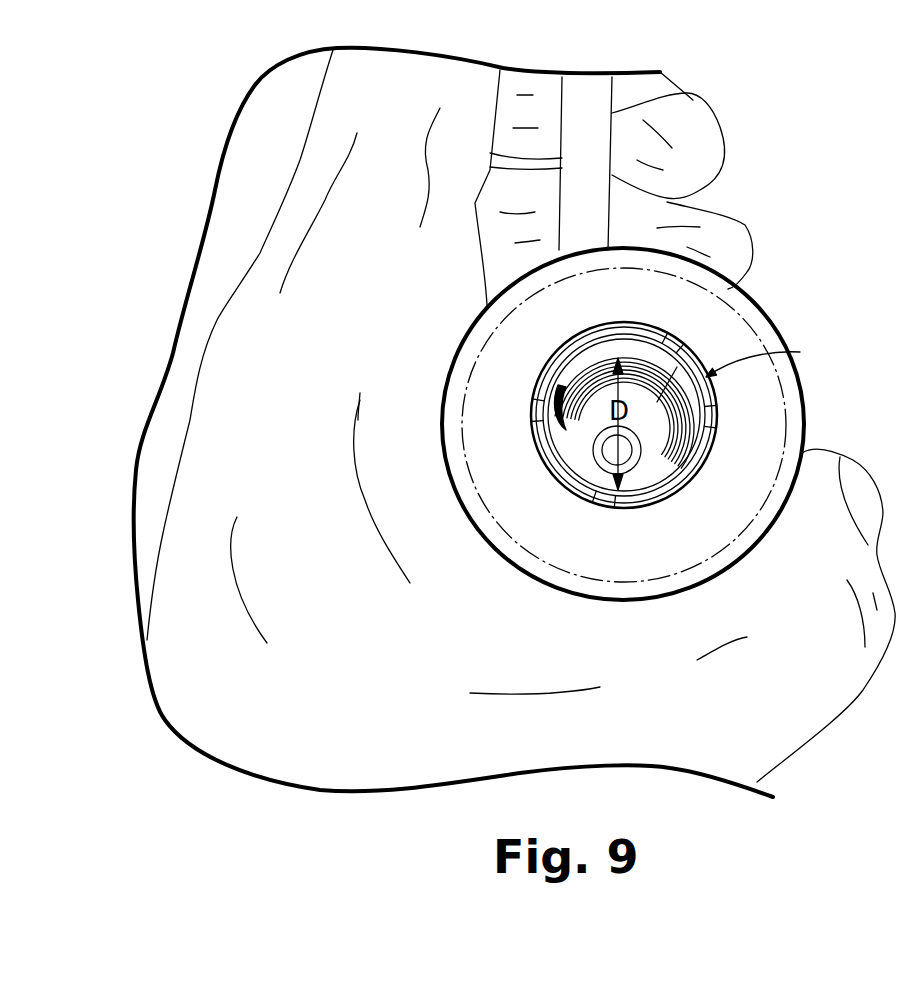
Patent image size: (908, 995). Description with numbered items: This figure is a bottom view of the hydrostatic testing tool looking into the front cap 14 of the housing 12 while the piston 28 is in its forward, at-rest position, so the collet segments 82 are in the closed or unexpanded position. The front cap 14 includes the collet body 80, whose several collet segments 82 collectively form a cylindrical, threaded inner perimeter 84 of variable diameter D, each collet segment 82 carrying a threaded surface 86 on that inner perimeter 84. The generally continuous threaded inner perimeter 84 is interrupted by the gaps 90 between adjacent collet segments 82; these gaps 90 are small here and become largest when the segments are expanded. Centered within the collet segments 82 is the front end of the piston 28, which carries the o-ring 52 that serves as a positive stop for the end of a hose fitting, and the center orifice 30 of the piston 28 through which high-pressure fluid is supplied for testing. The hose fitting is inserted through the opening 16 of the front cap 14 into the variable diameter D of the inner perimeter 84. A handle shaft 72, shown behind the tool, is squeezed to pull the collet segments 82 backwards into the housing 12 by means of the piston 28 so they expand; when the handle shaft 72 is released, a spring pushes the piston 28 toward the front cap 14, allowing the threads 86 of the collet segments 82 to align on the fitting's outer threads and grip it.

The housing 12 is at (750, 290).
The front cap 14 is at (803, 405).
The opening 16 is at (708, 452).
The piston 28 is at (662, 468).
The center orifice 30 is at (633, 450).
The o-ring 52 is at (597, 462).
The handle shaft 72 is at (688, 95).
The collet body 80 is at (766, 357).
The collet segments 82 is at (658, 340).
The inner perimeter 84 is at (598, 363).
The threaded surface 86 is at (632, 363).
The gaps 90 is at (700, 362).